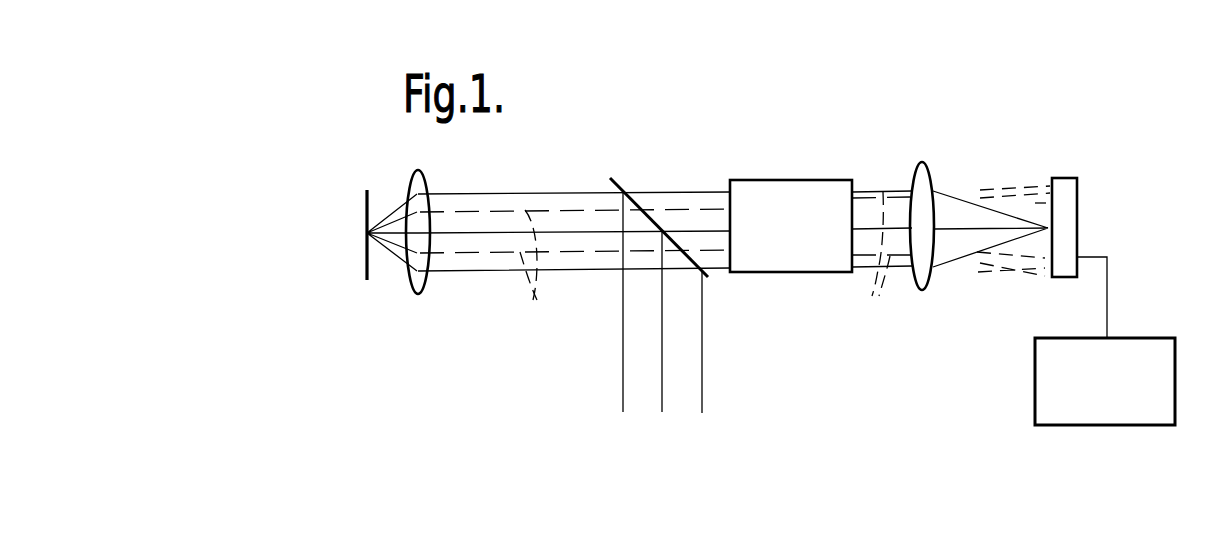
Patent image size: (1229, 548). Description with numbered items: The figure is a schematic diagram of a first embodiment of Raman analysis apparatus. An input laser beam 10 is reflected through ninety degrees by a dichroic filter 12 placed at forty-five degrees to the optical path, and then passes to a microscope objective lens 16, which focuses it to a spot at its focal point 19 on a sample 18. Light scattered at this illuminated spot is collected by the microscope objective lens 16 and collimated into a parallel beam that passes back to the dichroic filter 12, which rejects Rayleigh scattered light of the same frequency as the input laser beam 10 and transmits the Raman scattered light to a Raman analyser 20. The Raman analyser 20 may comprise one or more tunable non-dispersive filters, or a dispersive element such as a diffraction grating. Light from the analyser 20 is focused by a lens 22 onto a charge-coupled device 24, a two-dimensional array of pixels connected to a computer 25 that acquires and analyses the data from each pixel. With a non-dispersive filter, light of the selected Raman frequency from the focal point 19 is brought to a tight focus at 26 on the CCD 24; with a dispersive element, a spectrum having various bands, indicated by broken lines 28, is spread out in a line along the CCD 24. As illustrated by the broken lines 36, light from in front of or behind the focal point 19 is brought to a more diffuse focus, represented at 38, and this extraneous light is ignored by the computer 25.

The input laser beam 10 is at (693, 394).
The dichroic filter 12 is at (617, 187).
The microscope objective lens 16 is at (421, 187).
The sample 18 is at (369, 196).
The focal point 19 is at (371, 266).
The Raman analyser 20 is at (772, 183).
The lens 22 is at (925, 172).
The charge-coupled device (CCD) 24 is at (1078, 184).
The computer 25 is at (1137, 347).
The focus on the CCD 26 is at (1048, 230).
The spectrum bands 28 is at (1003, 270).
The broken lines (diffuse focus light) 36 is at (705, 259).
The circle of diffuse focus 38 is at (1043, 202).